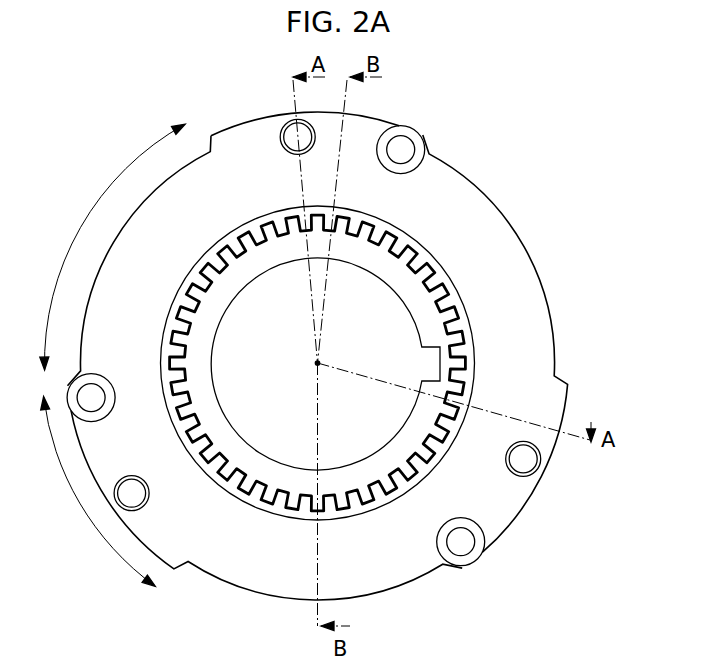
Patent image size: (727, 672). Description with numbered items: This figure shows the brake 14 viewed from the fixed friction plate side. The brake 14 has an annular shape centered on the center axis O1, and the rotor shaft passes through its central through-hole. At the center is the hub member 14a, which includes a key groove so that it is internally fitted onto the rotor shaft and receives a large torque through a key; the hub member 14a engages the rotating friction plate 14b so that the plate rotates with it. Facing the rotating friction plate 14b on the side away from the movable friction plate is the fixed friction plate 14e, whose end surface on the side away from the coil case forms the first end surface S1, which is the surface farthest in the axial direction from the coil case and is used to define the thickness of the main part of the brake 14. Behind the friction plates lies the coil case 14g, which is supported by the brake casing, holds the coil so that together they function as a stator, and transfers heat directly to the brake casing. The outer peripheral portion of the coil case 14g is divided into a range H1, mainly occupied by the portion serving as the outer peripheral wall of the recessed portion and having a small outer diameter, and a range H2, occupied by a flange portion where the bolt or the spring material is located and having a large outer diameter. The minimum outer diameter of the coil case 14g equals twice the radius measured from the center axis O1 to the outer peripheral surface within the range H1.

The brake 14 is at (517, 111).
The hub member 14a is at (441, 263).
The rotating friction plate 14b is at (463, 302).
The fixed friction plate 14e is at (528, 337).
The coil case 14g is at (409, 128).
The first end surface S1 is at (507, 380).
The center axis O1 is at (299, 375).
The range H1 is at (112, 247).
The range H2 is at (97, 492).